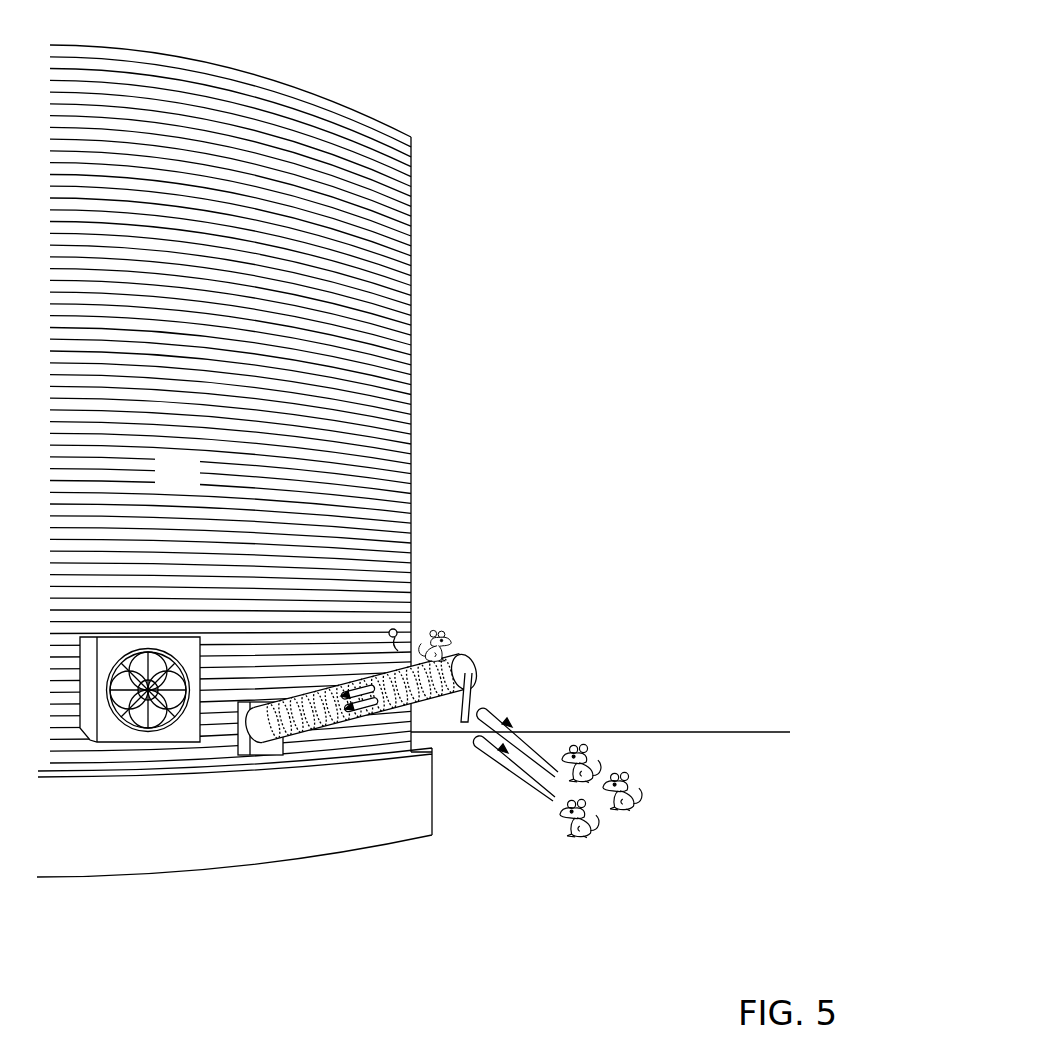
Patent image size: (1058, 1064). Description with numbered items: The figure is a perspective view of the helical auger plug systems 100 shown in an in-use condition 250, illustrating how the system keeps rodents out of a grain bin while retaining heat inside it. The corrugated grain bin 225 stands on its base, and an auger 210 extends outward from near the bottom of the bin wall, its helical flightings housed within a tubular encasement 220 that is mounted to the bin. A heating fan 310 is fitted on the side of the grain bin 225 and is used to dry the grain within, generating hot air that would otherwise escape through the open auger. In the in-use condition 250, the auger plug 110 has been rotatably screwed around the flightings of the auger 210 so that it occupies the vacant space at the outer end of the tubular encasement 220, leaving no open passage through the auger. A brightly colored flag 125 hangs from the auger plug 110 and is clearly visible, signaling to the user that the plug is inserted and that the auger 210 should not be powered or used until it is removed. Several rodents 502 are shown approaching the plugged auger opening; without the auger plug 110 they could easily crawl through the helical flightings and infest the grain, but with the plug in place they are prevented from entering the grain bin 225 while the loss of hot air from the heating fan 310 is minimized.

The helical auger plug systems 100 is at (612, 90).
The in-use condition 250 is at (645, 125).
The grain bin 225 is at (193, 483).
The auger plug 110 is at (465, 657).
The flag 125 is at (472, 693).
The rodents 502 is at (623, 775).
The heating fan 310 is at (163, 724).
The auger 210 is at (283, 734).
The tubular encasement 220 is at (418, 707).